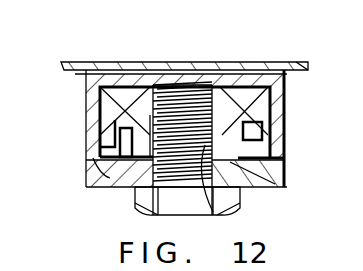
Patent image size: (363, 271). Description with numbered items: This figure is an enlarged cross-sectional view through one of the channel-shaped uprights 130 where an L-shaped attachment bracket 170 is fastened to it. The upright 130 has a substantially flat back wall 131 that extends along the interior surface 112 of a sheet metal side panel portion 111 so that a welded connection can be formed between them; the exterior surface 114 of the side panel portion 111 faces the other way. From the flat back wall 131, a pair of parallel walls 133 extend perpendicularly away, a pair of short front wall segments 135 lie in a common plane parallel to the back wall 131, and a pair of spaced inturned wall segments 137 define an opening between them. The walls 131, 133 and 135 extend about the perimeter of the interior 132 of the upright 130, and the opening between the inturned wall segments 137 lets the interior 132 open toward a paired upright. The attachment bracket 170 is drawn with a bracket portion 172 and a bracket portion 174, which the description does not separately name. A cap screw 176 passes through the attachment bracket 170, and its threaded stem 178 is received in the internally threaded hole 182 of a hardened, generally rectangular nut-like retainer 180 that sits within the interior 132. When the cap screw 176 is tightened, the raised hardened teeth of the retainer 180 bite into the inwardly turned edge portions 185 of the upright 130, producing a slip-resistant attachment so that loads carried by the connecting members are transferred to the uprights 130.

The side panel portion 111 is at (308, 66).
The interior surface 112 is at (75, 73).
The exterior surface 114 is at (113, 62).
The upright 130 is at (286, 123).
The flat back wall 131 is at (99, 105).
The interior 132 is at (262, 160).
The parallel walls 133 is at (86, 131).
The front wall segments 135 is at (268, 160).
The inturned wall segments 137 is at (238, 204).
The L-shaped attachment bracket 170 is at (266, 189).
The base plate 172 is at (282, 190).
The base portion 174 is at (103, 186).
The cap screw 176 is at (137, 214).
The threaded stem 178 is at (190, 110).
The nut-like retainer 180 is at (262, 104).
The internally threaded hole 182 is at (245, 125).
The inwardly turned edge portions 185 is at (125, 95).